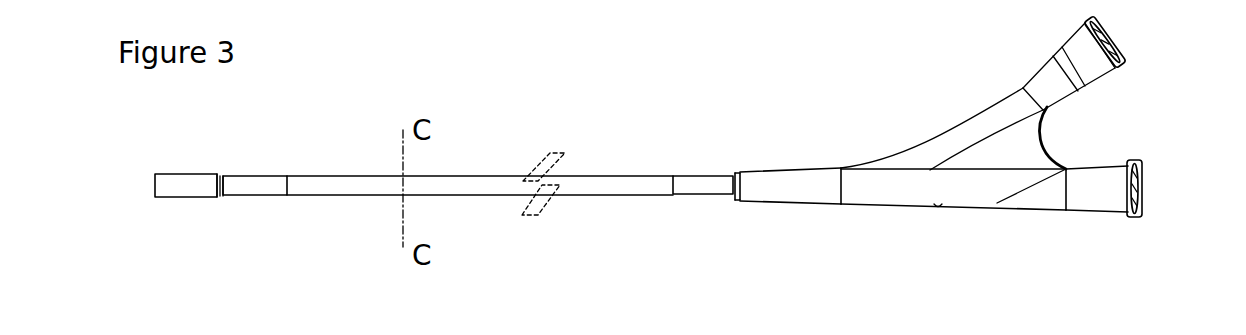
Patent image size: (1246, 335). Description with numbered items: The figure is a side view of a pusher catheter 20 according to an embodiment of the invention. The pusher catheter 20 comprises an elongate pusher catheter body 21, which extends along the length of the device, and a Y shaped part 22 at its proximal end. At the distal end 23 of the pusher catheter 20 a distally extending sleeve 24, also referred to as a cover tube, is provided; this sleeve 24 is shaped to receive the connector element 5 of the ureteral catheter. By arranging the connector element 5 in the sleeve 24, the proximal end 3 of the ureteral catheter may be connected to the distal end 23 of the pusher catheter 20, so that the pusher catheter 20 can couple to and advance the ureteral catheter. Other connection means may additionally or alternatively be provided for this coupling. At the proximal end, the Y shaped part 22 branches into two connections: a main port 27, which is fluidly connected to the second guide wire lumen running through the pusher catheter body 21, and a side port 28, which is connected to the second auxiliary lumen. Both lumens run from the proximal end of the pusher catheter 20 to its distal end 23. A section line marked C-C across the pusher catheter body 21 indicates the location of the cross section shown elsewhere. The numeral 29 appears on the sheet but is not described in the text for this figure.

The proximal end 3 is at (488, 0).
The connector element 5 is at (436, 15).
The pusher catheter 20 is at (715, 140).
The elongate pusher catheter body 21 is at (477, 185).
The Y shaped part 22 is at (990, 116).
The distal end 23 is at (222, 218).
The distally extending sleeve 24 is at (173, 186).
The main port 27 is at (1143, 188).
The side port 28 is at (1112, 45).
The element of adjacent figure (label cut off) 29 is at (1013, 6).